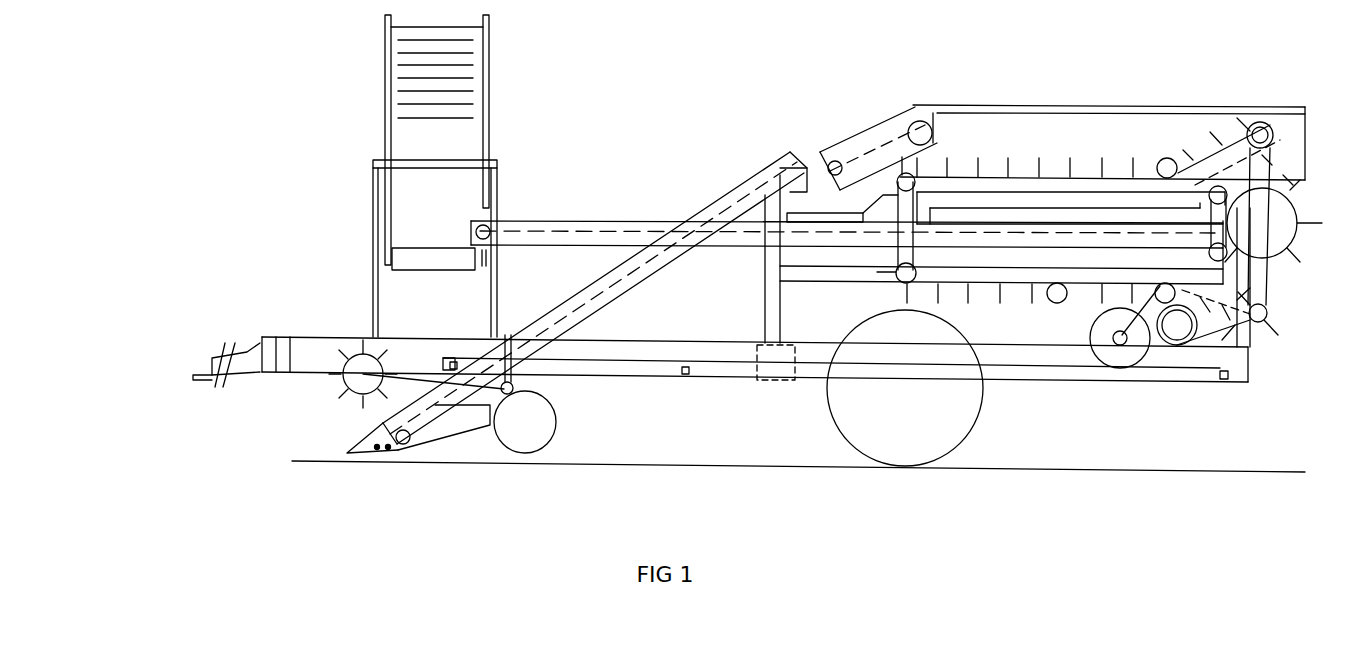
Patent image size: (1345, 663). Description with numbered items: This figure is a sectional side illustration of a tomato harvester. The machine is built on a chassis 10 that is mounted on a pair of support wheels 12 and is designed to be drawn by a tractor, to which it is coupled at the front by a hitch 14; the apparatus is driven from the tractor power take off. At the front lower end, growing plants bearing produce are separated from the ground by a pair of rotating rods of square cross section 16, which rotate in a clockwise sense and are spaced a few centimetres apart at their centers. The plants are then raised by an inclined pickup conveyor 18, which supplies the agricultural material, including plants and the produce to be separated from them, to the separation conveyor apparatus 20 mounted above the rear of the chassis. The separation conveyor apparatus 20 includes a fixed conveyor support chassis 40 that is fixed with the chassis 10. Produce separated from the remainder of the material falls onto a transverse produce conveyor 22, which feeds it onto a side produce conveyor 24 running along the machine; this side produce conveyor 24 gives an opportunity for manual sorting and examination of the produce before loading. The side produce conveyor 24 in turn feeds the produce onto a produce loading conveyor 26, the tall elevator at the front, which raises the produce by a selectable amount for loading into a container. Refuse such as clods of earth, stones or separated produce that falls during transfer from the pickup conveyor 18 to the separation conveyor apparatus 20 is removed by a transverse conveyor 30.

The chassis 10 is at (1237, 373).
The support wheels 12 is at (973, 408).
The hitch 14 is at (195, 373).
The rotating rods of square cross section 16 is at (388, 452).
The inclined pickup conveyor 18 is at (532, 335).
The separation conveyor apparatus 20 is at (947, 113).
The transverse produce conveyor 22 is at (1110, 215).
The side produce conveyor 24 is at (585, 230).
The produce loading conveyor 26 is at (478, 85).
The transverse conveyor 30 is at (822, 221).
The fixed conveyor support chassis 40 is at (1010, 202).